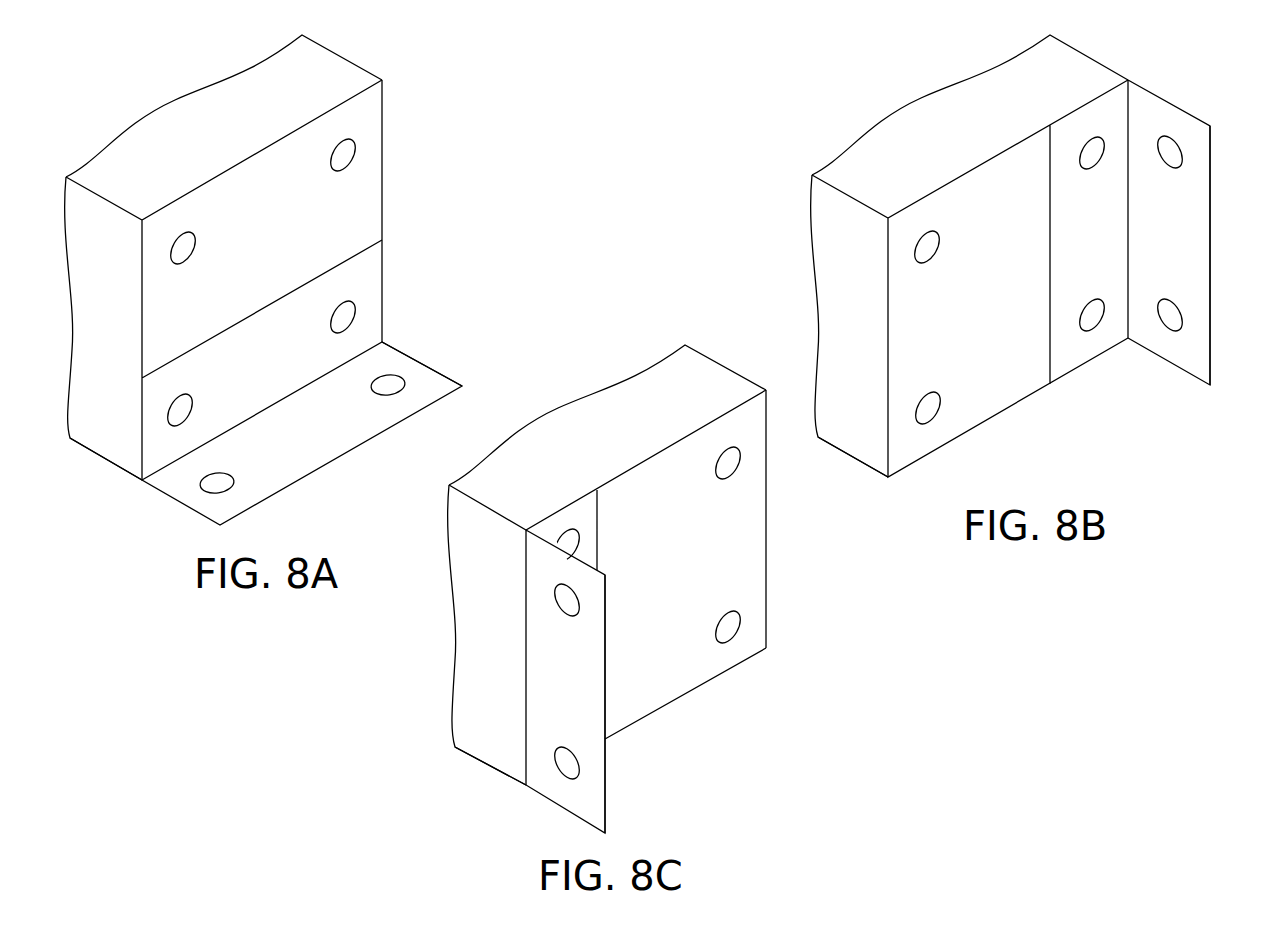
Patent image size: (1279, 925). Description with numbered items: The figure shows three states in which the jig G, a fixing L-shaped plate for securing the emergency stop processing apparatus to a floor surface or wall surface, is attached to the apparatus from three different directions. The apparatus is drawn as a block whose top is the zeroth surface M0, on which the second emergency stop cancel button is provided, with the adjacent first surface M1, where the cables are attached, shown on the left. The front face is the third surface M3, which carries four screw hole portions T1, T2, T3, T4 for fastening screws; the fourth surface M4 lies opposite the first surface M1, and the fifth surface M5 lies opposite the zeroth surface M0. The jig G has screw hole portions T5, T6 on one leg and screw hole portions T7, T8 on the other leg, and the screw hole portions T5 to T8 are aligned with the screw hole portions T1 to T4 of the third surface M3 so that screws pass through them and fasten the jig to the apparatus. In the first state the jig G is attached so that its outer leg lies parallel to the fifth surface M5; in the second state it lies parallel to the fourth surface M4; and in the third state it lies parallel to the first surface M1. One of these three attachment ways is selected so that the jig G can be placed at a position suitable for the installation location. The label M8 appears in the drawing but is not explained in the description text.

In FIG. 8A, the zeroth surface M0 is at (230, 100).
In FIG. 8B, the zeroth surface M0 is at (992, 92).
In FIG. 8C, the zeroth surface M0 is at (627, 403).
In FIG. 8A, the first surface M1 is at (82, 249).
In FIG. 8B, the first surface M1 is at (828, 248).
In FIG. 8C, the first surface M1 is at (465, 566).
In FIG. 8A, the third surface M3 is at (372, 213).
In FIG. 8B, the third surface M3 is at (992, 405).
In FIG. 8C, the third surface M3 is at (752, 598).
In FIG. 8A, the fourth surface M4 is at (400, 118).
In FIG. 8B, the fourth surface M4 is at (1140, 58).
In FIG. 8C, the fourth surface M4 is at (790, 562).
In FIG. 8A, the fifth surface M5 is at (107, 484).
In FIG. 8B, the fifth surface M5 is at (842, 479).
In FIG. 8C, the fifth surface M5 is at (477, 785).
In FIG. 8A, the mounting plate M8 is at (305, 455).
In FIG. 8B, the mounting plate M8 is at (1200, 292).
In FIG. 8C, the mounting plate M8 is at (625, 650).
In FIG. 8A, the jig G is at (370, 325).
In FIG. 8B, the jig G is at (1200, 230).
In FIG. 8C, the jig G is at (597, 782).
In FIG. 8A, the screw hole portion T1 is at (353, 150).
In FIG. 8B, the screw hole portion T1 is at (1083, 160).
In FIG. 8C, the screw hole portion T1 is at (720, 470).
In FIG. 8B, the screw hole portion T2 is at (1083, 312).
In FIG. 8C, the screw hole portion T2 is at (725, 635).
In FIG. 8A, the screw hole portion T3 is at (190, 243).
In FIG. 8B, the screw hole portion T3 is at (935, 243).
In FIG. 8C, the screw hole portion T3 is at (578, 548).
In FIG. 8A, the screw hole portion T4 is at (190, 400).
In FIG. 8B, the screw hole portion T4 is at (938, 400).
In FIG. 8A, the screw hole portion T5 is at (220, 401).
In FIG. 8B, the screw hole portion T5 is at (1010, 357).
In FIG. 8C, the screw hole portion T5 is at (627, 545).
In FIG. 8A, the screw hole portion T6 is at (398, 236).
In FIG. 8B, the screw hole portion T6 is at (1033, 178).
In FIG. 8A, the screw hole portion T7 is at (213, 490).
In FIG. 8B, the screw hole portion T7 is at (1170, 322).
In FIG. 8C, the screw hole portion T7 is at (570, 610).
In FIG. 8A, the screw hole portion T8 is at (392, 388).
In FIG. 8B, the screw hole portion T8 is at (1168, 160).
In FIG. 8C, the screw hole portion T8 is at (565, 750).